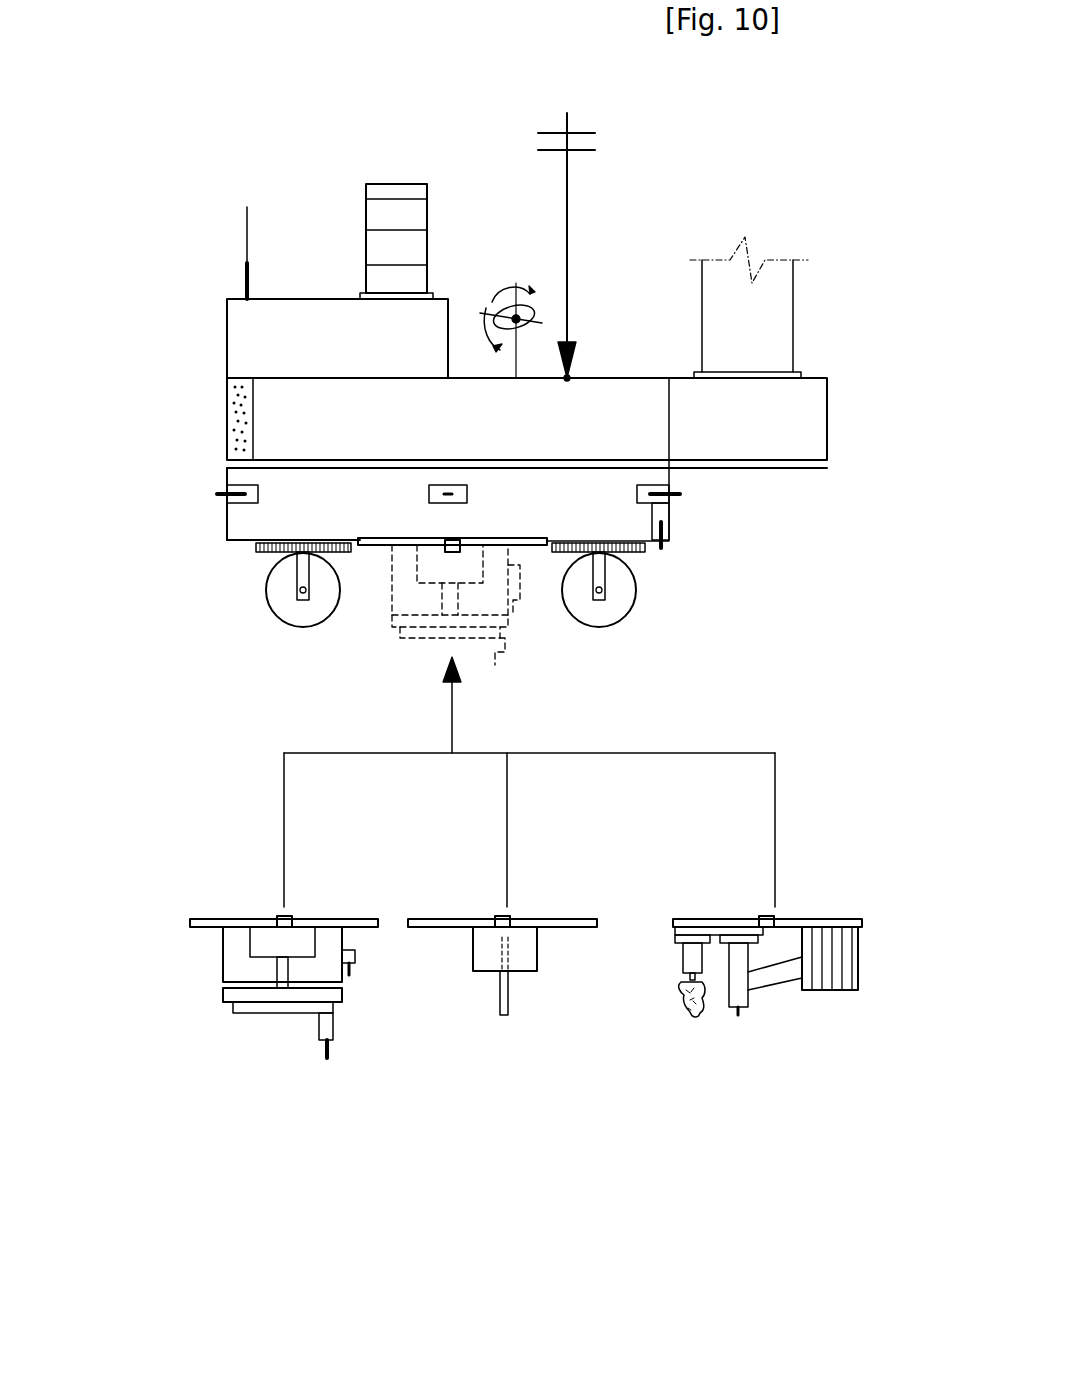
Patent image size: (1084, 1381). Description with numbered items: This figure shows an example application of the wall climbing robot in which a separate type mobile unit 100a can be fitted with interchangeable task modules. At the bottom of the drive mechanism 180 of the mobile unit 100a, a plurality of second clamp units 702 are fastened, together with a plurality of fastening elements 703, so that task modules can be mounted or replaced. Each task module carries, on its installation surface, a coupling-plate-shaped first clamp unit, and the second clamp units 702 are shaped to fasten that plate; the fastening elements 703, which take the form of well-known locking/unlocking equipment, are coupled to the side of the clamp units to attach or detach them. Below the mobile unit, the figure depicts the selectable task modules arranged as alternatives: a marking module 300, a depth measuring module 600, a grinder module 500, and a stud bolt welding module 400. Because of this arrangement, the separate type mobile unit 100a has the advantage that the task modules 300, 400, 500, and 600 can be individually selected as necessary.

The separate type mobile unit 100a is at (722, 210).
The drive mechanism 180 is at (243, 522).
The second clamp unit 702 is at (372, 540).
The fastening element 703 is at (452, 540).
The marking module 300 is at (231, 1085).
The depth measuring module 600 is at (471, 1085).
The grinder module 500 is at (733, 1085).
The stud bolt welding module 400 is at (740, 1027).